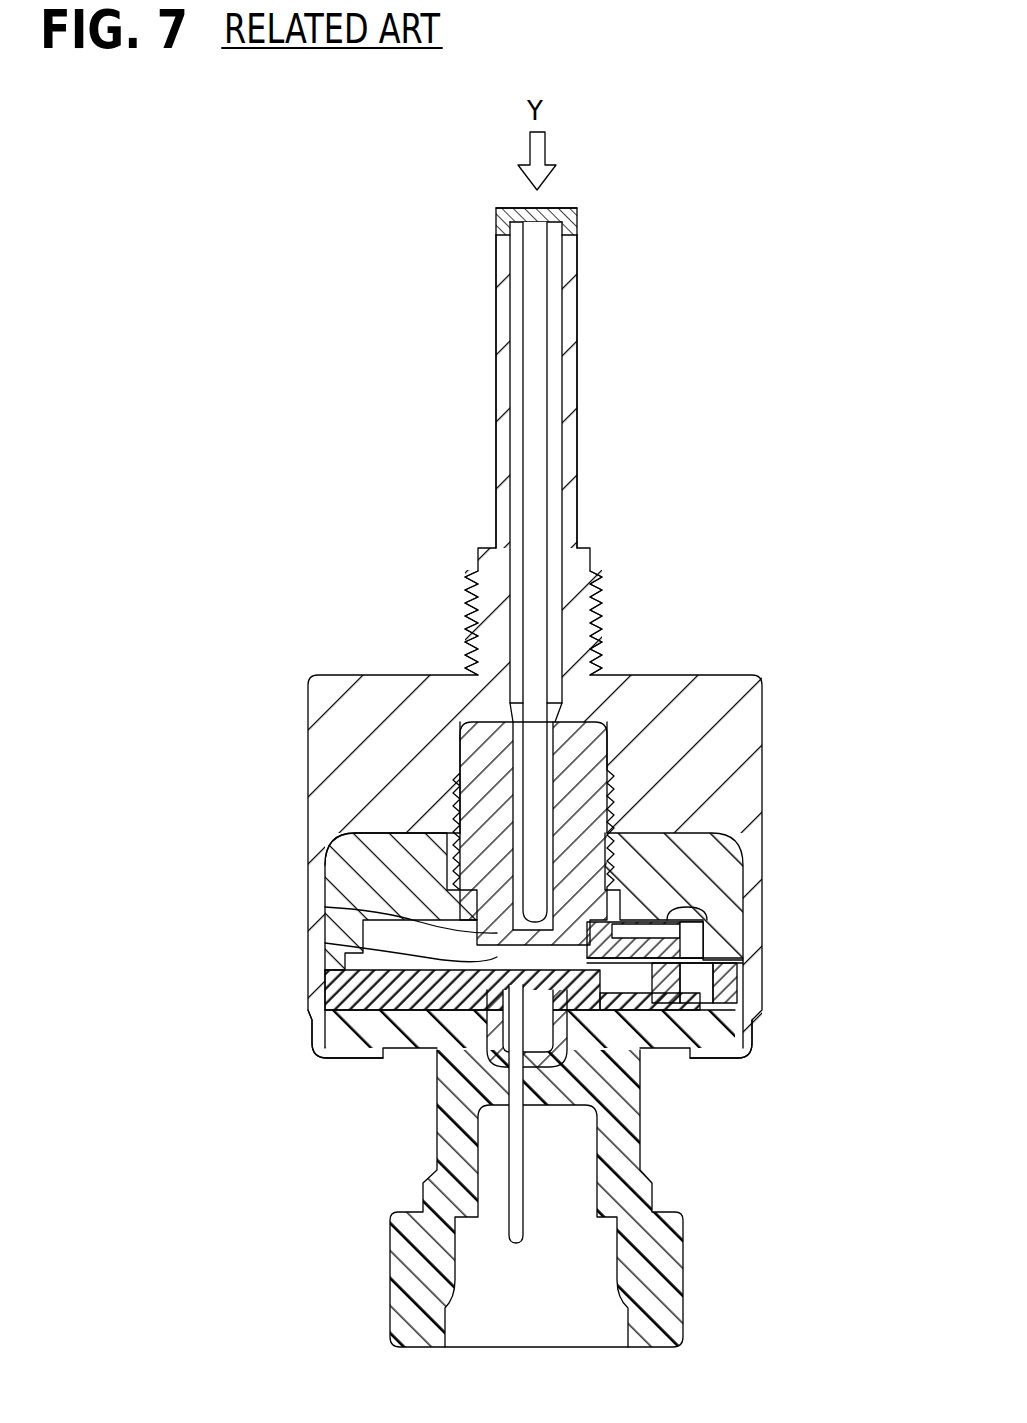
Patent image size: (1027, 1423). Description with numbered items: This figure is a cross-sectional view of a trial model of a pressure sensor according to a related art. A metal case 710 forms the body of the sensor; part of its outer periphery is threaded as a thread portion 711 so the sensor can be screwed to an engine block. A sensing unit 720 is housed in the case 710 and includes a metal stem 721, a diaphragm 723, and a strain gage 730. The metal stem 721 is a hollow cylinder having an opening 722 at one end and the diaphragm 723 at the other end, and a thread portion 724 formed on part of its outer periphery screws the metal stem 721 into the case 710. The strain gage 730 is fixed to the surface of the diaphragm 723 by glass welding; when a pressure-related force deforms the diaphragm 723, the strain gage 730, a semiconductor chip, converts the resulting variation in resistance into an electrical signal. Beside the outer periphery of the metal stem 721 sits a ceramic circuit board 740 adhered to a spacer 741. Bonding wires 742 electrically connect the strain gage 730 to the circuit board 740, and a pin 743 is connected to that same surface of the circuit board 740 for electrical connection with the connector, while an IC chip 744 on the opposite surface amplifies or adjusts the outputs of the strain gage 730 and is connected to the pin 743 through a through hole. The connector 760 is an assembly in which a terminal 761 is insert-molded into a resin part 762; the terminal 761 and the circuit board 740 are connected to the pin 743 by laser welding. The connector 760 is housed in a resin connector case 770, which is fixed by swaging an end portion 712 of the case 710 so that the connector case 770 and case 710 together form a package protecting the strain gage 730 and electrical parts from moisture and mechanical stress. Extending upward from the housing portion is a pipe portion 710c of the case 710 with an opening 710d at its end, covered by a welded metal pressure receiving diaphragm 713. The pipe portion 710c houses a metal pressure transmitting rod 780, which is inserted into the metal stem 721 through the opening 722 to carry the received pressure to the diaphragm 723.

The case 710 is at (307, 688).
The pipe portion 710c is at (503, 495).
The opening 710d is at (516, 236).
The thread portion 711 is at (470, 618).
The end portion 712 is at (345, 1058).
The pressure receiving diaphragm 713 is at (498, 216).
The sensing unit 720 is at (571, 814).
The metal stem 721 is at (477, 863).
The opening 722 is at (482, 750).
The diaphragm 723 is at (477, 922).
The thread portion 724 is at (478, 815).
The strain gage 730 is at (510, 960).
The circuit board 740 is at (645, 948).
The spacer 741 is at (722, 880).
The bonding wires 742 is at (668, 985).
The pin 743 is at (715, 990).
The IC chip 744 is at (650, 915).
The connector 760 is at (505, 1040).
The terminal 761 is at (518, 1175).
The resin part 762 is at (633, 1125).
The connector case 770 is at (447, 1188).
The pressure transmitting rod 780 is at (533, 578).